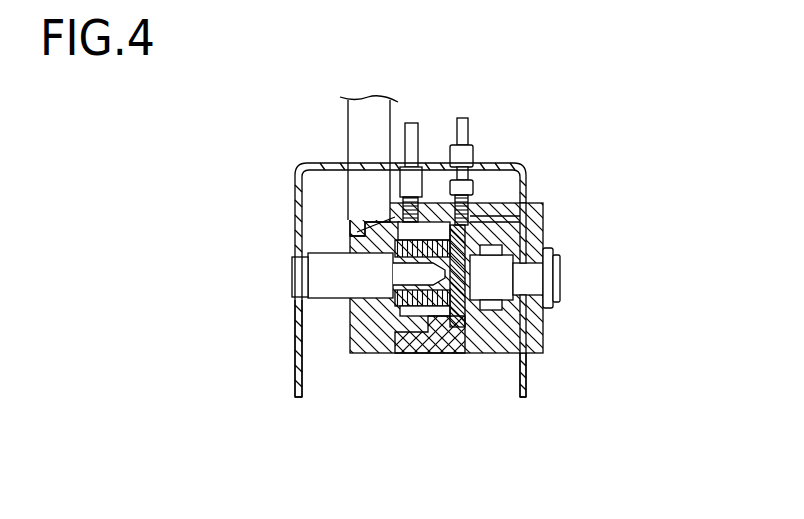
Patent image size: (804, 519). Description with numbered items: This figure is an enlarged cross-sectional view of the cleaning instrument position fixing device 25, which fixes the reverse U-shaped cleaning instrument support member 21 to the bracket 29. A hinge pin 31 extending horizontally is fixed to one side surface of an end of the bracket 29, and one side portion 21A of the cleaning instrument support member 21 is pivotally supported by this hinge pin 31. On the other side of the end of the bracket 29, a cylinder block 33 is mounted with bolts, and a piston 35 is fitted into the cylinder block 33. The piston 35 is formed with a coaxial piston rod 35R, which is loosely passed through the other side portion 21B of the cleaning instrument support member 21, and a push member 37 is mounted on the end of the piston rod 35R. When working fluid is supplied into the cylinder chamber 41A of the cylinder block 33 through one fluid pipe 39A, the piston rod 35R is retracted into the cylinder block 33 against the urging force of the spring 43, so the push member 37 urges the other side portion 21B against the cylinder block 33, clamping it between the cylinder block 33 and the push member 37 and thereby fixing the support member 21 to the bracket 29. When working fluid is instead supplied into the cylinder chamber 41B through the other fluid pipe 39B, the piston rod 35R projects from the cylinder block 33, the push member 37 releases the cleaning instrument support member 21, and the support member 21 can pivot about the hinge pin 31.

The cleaning instrument support member 21 is at (291, 169).
The one side portion of the cleaning instrument support member 21A is at (298, 335).
The other side portion of the cleaning instrument support member 21B is at (527, 380).
The cleaning instrument position fixing device 25 is at (562, 208).
The bracket 29 is at (367, 118).
The hinge pin 31 is at (305, 275).
The cylinder block 33 is at (430, 340).
The piston 35 is at (463, 342).
The piston rod 35R is at (535, 278).
The push member 37 is at (532, 330).
The one fluid pipe 39A is at (462, 135).
The other fluid pipe 39B is at (412, 125).
The cylinder chamber 41A is at (520, 213).
The cylinder chamber 41B is at (395, 214).
The spring 43 is at (405, 342).